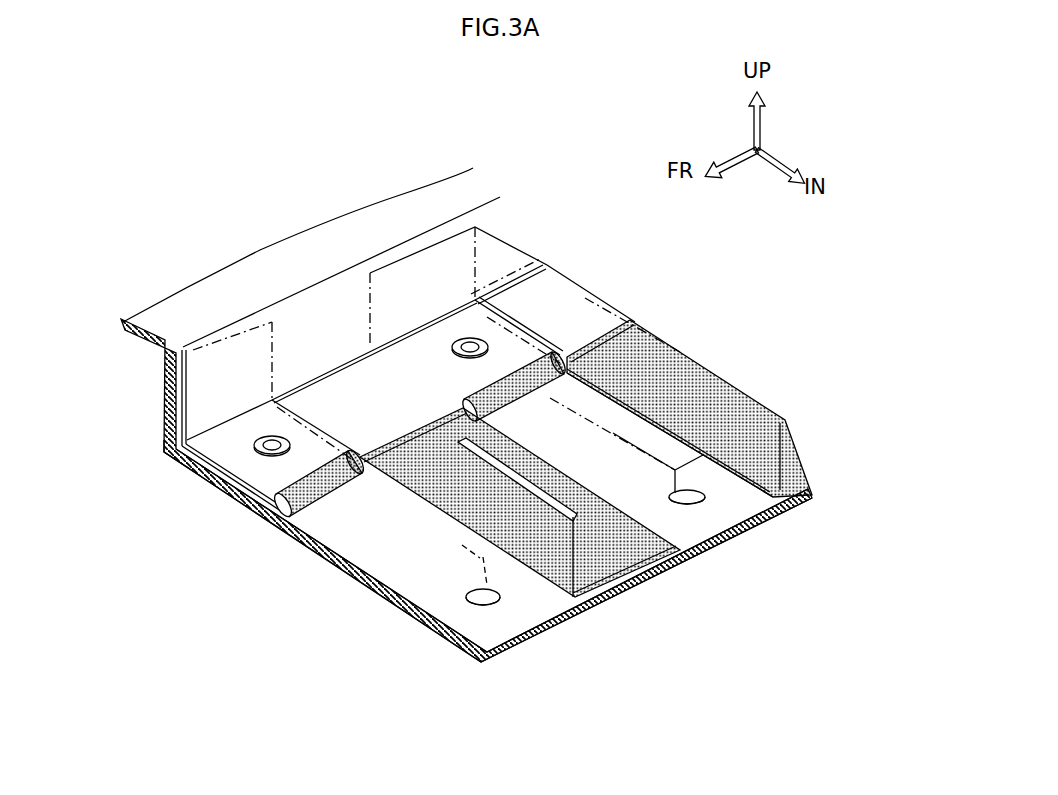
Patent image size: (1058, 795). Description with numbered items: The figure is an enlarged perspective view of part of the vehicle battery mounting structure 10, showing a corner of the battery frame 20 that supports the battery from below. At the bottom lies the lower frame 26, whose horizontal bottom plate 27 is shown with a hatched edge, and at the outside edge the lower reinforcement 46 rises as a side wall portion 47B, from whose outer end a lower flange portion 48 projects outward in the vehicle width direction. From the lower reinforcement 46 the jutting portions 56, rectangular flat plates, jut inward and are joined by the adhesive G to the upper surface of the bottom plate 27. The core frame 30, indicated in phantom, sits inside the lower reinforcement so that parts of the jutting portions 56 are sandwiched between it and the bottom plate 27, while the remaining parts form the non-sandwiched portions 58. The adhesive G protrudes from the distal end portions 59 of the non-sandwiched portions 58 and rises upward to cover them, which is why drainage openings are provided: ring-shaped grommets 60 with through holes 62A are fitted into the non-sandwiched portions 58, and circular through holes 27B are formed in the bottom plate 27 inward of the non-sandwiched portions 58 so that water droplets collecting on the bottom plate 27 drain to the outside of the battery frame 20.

The vehicle battery mounting structure 10 is at (530, 195).
The battery frame 20 is at (182, 476).
The lower frame 26 is at (393, 604).
The bottom plate 27 is at (355, 552).
The through holes 27B is at (500, 603).
The core frame 30 is at (524, 251).
The lower reinforcement 46 is at (158, 351).
The side wall portions 47B is at (213, 395).
The lower flange portions 48 is at (223, 302).
The jutting portions 56 is at (557, 316).
The non-sandwiched portions 58 is at (467, 320).
The distal end portions 59 is at (267, 513).
The grommets 60 is at (462, 345).
The through holes 62A is at (472, 345).
The adhesive G is at (347, 465).